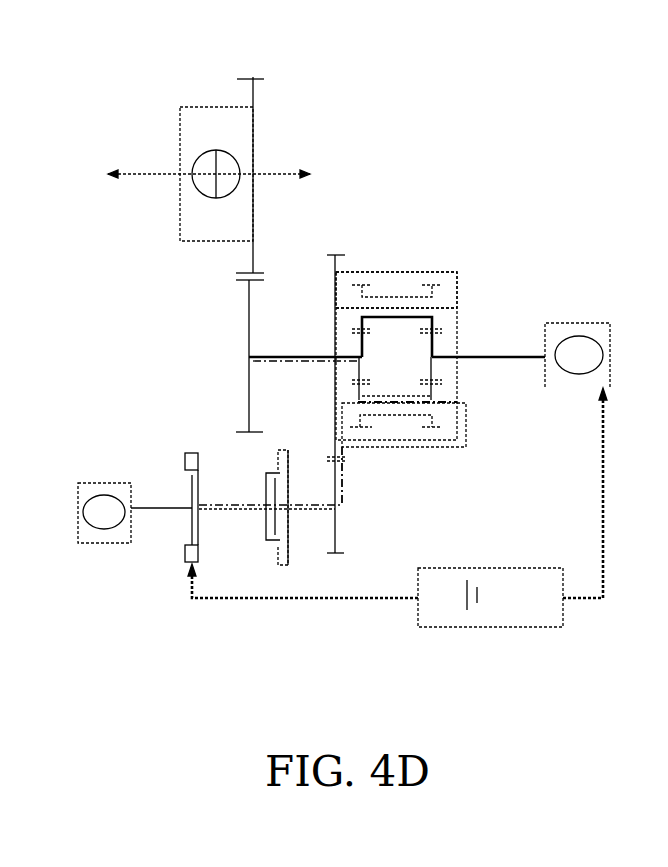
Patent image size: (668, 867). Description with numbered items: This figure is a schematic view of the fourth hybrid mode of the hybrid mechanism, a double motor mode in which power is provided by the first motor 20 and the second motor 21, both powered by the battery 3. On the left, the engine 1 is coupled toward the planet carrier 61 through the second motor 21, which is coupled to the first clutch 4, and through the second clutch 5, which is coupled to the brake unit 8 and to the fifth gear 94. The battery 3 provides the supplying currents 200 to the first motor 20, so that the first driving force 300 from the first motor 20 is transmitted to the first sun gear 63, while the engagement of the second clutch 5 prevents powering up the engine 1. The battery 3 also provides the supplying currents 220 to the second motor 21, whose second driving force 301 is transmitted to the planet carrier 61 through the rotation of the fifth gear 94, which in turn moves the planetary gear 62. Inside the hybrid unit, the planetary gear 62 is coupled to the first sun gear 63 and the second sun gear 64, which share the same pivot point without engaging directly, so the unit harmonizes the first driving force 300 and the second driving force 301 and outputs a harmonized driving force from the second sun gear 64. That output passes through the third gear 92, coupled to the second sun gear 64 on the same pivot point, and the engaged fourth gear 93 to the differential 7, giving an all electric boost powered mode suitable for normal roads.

The engine 1 is at (123, 492).
The battery 3 is at (510, 618).
The first clutch 4 is at (187, 520).
The second clutch 5 is at (268, 520).
The differential 7 is at (200, 156).
The brake unit 8 is at (288, 560).
The first motor 20 is at (555, 323).
The second motor 21 is at (195, 455).
The planet carrier 61 is at (336, 253).
The planetary gear 62 is at (400, 296).
The first sun gear 63 is at (436, 365).
The second sun gear 64 is at (358, 367).
The third gear 92 is at (248, 283).
The fourth gear 93 is at (252, 76).
The fifth gear 94 is at (338, 553).
The supplying currents 200 is at (606, 492).
The supplying currents 220 is at (305, 602).
The first driving force 300 is at (488, 352).
The second driving force 301 is at (402, 405).